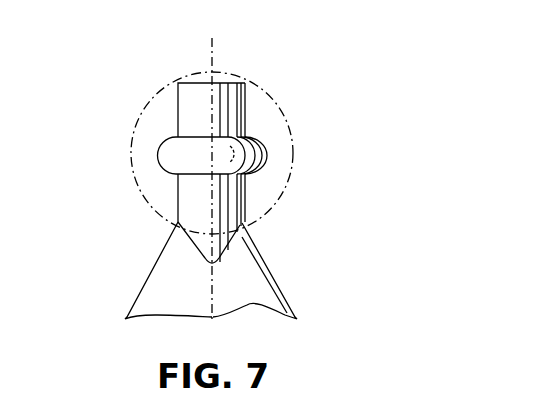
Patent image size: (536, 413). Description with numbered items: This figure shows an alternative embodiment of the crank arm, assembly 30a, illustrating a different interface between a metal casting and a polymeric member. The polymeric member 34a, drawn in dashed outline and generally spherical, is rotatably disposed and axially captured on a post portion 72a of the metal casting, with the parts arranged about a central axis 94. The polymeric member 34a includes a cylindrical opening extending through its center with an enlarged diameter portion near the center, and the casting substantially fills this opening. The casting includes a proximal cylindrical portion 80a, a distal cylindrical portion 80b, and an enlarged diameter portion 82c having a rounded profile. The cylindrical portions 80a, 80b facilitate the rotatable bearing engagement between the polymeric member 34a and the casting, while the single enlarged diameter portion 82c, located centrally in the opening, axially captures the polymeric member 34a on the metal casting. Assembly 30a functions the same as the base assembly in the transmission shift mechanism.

The central axis 94 is at (210, 48).
The post portion 72a is at (187, 120).
The distal cylindrical portion 80b is at (243, 83).
The proximal cylindrical portion 80a is at (185, 193).
The enlarged diameter portion 82c is at (255, 135).
The polymeric member 34a is at (296, 152).
The assembly 30a is at (262, 268).